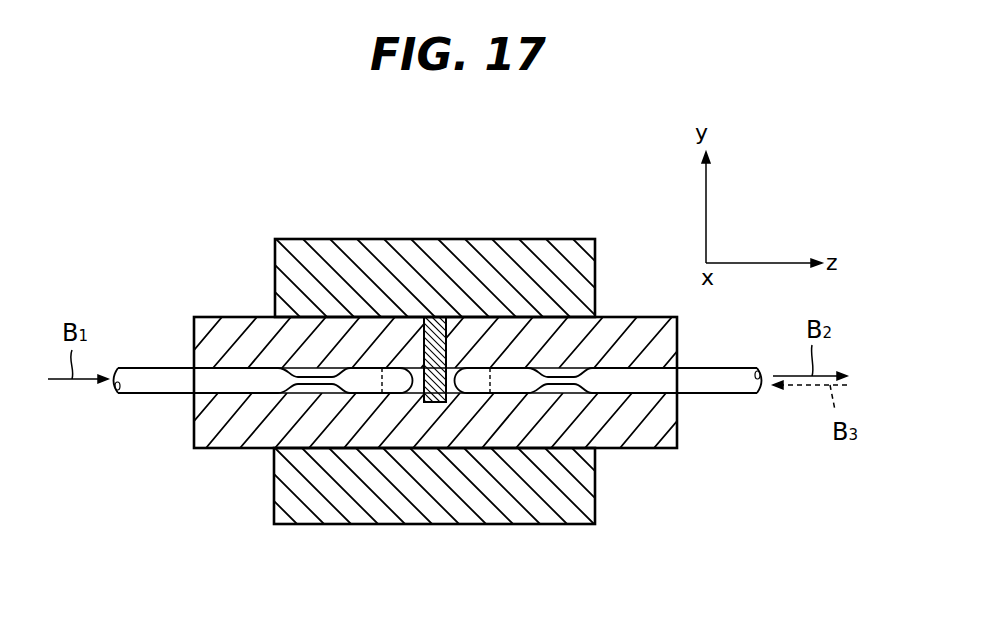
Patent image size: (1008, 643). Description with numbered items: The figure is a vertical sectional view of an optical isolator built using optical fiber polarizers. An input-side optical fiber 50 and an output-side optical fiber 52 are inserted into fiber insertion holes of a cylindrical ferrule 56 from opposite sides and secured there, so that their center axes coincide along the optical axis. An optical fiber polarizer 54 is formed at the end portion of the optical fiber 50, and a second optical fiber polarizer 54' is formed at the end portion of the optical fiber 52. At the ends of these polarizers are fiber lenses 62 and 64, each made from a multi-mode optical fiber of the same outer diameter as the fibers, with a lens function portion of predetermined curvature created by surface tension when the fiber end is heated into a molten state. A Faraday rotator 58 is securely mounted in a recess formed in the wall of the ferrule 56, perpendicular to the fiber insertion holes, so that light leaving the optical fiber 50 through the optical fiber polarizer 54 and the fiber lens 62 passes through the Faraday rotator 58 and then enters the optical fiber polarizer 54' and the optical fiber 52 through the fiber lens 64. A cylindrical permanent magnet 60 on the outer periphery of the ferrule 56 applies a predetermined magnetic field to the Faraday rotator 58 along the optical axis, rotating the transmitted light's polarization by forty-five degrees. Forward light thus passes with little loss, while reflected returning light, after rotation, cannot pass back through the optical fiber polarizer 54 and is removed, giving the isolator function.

The optical fiber 50 is at (263, 420).
The optical fiber 52 is at (625, 477).
The optical fiber polarizer 54 is at (289, 323).
The optical fiber polarizer 54' is at (592, 459).
The cylindrical ferrule 56 is at (631, 317).
The Faraday rotator 58 is at (433, 402).
The cylindrical permanent magnet 60 is at (438, 238).
The fiber lens 62 is at (393, 393).
The fiber lens 64 is at (475, 393).